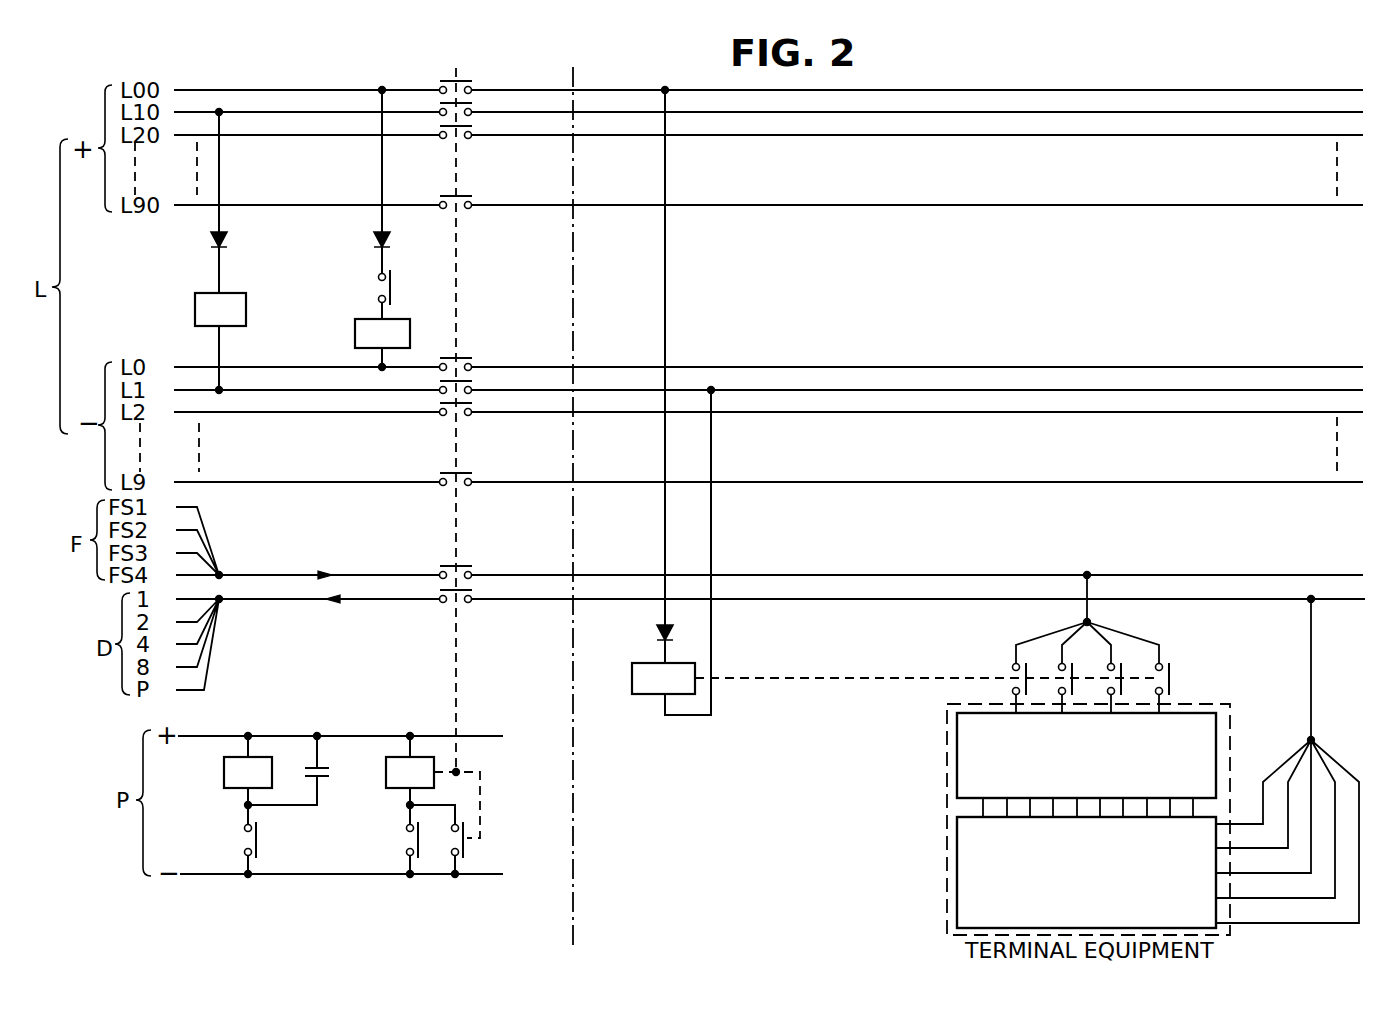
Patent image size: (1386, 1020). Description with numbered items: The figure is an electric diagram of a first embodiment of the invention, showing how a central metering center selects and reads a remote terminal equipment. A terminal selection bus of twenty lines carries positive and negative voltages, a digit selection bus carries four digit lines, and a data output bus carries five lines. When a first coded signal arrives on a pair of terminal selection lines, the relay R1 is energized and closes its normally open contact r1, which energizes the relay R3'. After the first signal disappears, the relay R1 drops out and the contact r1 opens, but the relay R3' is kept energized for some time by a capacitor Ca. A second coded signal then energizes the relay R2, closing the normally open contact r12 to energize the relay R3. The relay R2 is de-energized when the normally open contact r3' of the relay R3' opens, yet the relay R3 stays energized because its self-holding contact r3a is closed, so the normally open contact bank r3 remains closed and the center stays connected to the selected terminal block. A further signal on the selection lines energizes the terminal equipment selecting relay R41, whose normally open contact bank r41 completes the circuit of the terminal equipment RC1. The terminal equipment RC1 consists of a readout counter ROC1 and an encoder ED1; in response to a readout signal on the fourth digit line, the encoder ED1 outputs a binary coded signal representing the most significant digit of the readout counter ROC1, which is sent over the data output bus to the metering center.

The relay R1 is at (233, 292).
The relay R2 is at (248, 253).
The relay R3 is at (356, 762).
The relay R3' is at (306, 756).
The terminal equipment selecting relay R41 is at (648, 693).
The normally open contact r1 is at (265, 848).
The normally open contact r12 is at (435, 848).
The normally open contact bank r3 is at (470, 314).
The normally open contact r3' is at (403, 287).
The self-holding contact r3a is at (459, 823).
The normally open contact bank r41 is at (955, 643).
The capacitor Ca is at (304, 770).
The readout counter ROC1 is at (957, 757).
The terminal equipment RC1 is at (947, 830).
The encoder ED1 is at (957, 878).